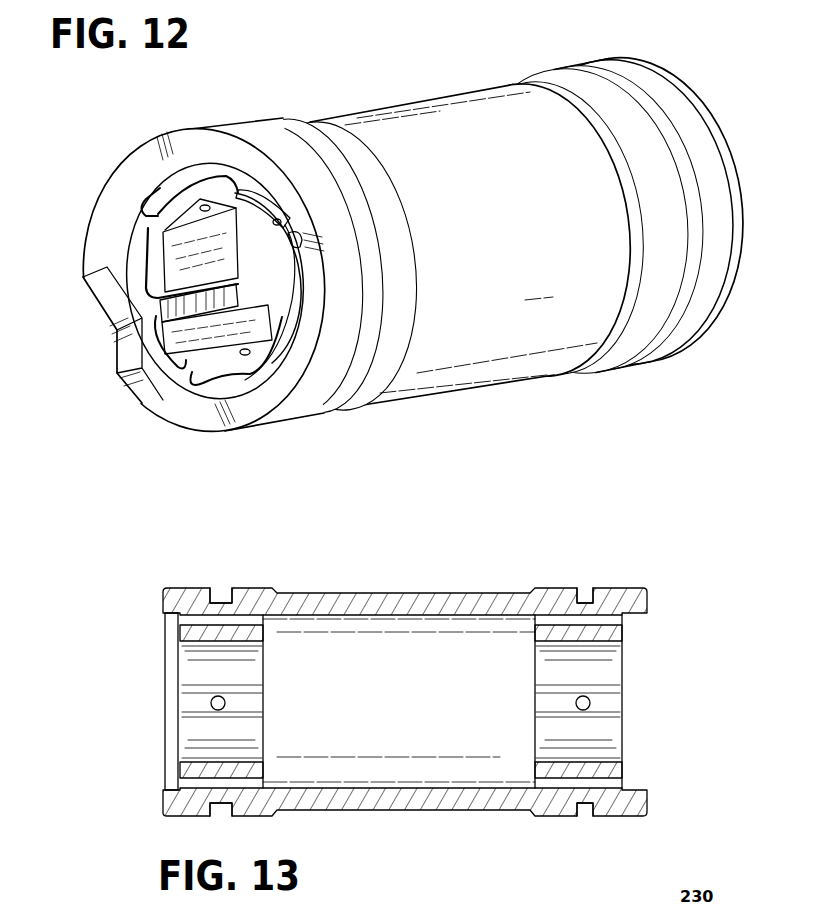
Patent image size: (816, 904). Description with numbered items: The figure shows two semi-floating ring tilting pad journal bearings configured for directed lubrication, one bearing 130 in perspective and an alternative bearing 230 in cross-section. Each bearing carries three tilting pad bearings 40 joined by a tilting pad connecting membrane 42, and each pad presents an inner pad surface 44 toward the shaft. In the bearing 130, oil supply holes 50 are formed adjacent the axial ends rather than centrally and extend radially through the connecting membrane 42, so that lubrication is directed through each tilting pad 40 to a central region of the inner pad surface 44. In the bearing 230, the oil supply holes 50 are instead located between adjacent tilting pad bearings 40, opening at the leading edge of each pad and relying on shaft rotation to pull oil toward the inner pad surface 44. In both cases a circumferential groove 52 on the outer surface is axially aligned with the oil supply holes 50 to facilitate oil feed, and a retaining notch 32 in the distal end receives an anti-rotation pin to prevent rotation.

In FIG. 12, the semi-floating ring tilting pad journal bearing 130 is at (504, 256).
In FIG. 13, the semi-floating ring tilting pad journal bearing 230 is at (400, 608).
In FIG. 12, the retaining notch 32 is at (127, 353).
In FIG. 13, the retaining notch 32 is at (634, 718).
In FIG. 12, the tilting pad bearing 40 is at (140, 267).
In FIG. 13, the tilting pad bearing 40 is at (180, 633).
In FIG. 12, the tilting pad connecting membrane 42 is at (150, 223).
In FIG. 12, the inner pad surface 44 is at (167, 248).
In FIG. 12, the oil supply hole 50 is at (203, 206).
In FIG. 13, the oil supply hole 50 is at (211, 703).
In FIG. 12, the circumferential groove 52 is at (317, 407).
In FIG. 13, the circumferential groove 52 is at (217, 600).